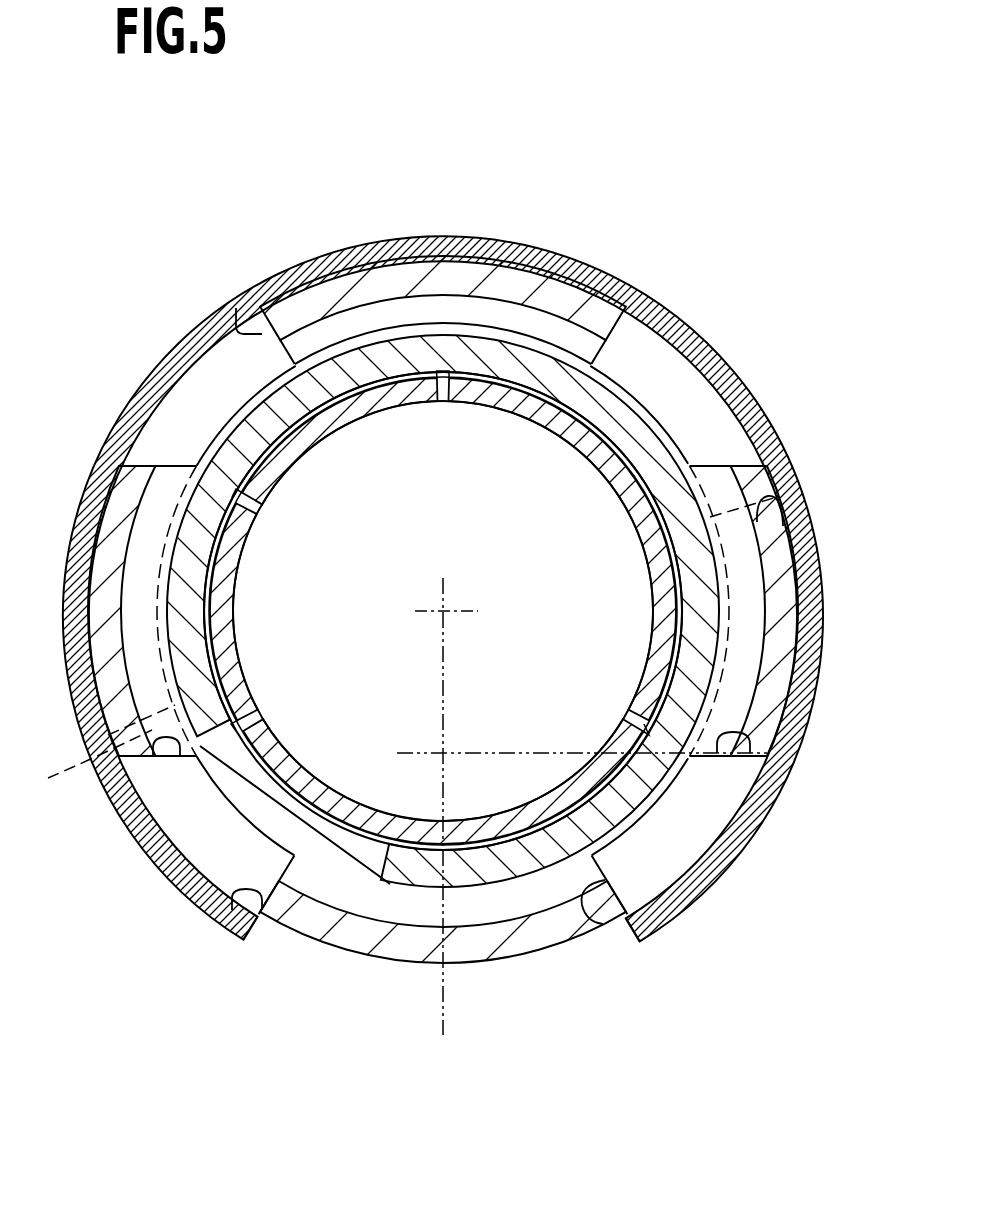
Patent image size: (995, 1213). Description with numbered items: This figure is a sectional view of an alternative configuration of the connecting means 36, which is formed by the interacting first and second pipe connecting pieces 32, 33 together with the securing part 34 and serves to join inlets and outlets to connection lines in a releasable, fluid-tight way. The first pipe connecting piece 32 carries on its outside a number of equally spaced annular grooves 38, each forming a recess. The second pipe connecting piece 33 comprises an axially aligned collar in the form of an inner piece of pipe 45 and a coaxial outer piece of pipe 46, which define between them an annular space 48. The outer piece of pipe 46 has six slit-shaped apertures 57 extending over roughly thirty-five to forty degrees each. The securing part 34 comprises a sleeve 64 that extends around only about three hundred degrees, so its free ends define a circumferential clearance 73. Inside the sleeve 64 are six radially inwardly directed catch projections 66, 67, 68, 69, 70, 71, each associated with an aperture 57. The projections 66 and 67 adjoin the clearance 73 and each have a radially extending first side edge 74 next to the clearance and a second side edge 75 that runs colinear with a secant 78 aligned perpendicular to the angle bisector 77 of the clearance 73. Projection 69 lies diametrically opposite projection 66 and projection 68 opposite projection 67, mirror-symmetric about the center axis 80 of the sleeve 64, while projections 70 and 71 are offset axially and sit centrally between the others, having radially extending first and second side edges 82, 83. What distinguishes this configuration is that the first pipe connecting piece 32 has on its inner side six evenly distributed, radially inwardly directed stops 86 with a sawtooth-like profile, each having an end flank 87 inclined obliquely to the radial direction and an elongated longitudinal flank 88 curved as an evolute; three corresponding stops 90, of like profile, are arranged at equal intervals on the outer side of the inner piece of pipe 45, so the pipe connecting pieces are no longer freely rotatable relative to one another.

The first pipe connecting piece 32 is at (440, 350).
The second pipe connecting piece 33 is at (96, 562).
The securing part 34 is at (148, 344).
The connecting means 36 is at (298, 224).
The annular groove 38 is at (375, 950).
The inner piece of pipe 45 is at (592, 440).
The outer piece of pipe 46 is at (780, 632).
The annular space 48 is at (740, 634).
The aperture 57 is at (245, 318).
The sleeve 64 is at (757, 394).
The projection 66 is at (185, 844).
The projection 67 is at (651, 844).
The projection 68 is at (198, 408).
The projection 69 is at (657, 408).
The projection 70 is at (180, 616).
The projection 71 is at (668, 533).
The clearance 73 is at (552, 962).
The first side edge 74 is at (265, 930).
The second side edge 75 is at (752, 745).
The angle bisector 77 is at (447, 1000).
The secant 78 is at (520, 752).
The center axis 80 is at (455, 600).
The first side edge 82 is at (162, 550).
The second side edge 83 is at (95, 750).
The stop 86 is at (447, 385).
The end flank 87 is at (455, 383).
The longitudinal flank 88 is at (310, 438).
The stop 90 is at (477, 366).